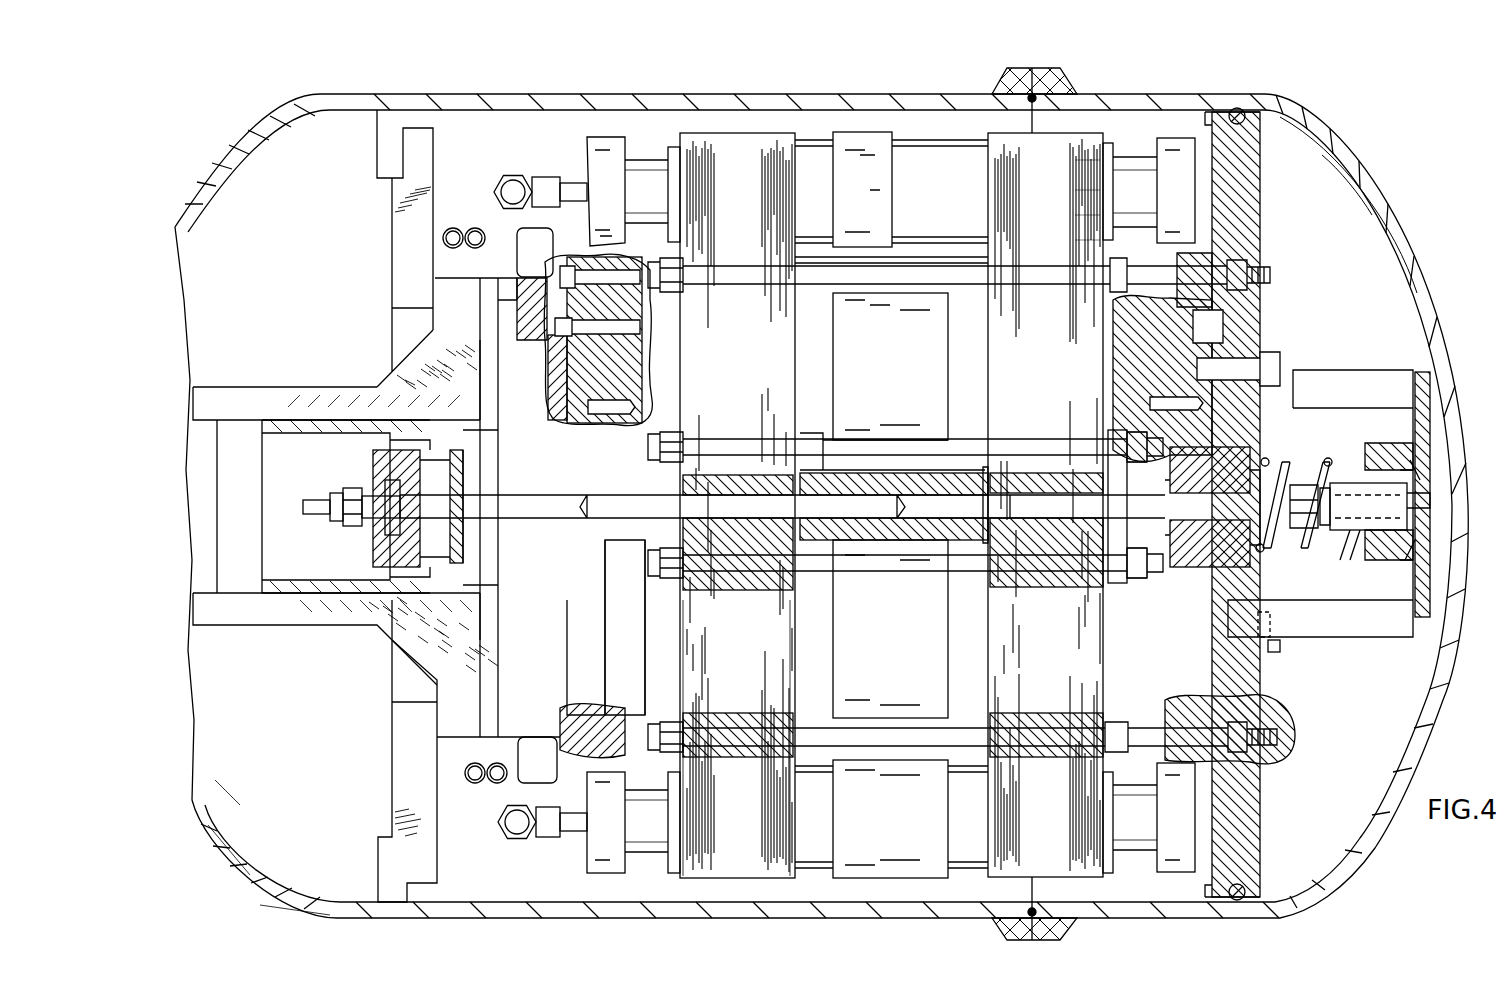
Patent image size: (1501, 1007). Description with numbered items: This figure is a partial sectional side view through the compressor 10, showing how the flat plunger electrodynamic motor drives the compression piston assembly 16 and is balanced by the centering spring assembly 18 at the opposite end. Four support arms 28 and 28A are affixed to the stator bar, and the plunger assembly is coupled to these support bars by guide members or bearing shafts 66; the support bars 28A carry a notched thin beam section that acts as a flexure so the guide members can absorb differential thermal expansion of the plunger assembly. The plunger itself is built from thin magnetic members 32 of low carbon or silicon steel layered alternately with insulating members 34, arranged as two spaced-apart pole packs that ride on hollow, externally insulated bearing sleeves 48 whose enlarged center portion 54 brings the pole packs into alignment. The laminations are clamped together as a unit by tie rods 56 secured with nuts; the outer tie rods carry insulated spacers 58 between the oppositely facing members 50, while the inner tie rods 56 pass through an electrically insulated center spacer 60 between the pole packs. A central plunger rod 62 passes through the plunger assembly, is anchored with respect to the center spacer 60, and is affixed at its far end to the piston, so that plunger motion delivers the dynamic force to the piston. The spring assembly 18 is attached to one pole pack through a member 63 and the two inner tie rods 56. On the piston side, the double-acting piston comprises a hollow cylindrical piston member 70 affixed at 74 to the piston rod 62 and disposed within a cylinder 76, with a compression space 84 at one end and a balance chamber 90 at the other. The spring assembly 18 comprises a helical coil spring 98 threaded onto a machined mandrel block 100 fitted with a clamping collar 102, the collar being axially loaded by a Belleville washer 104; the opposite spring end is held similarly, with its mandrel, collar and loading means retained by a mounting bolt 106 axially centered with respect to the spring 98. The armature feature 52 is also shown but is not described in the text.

The compressor 10 is at (1408, 829).
The compression piston assembly 16 is at (392, 452).
The centering spring assembly 18 is at (1316, 424).
The support member or arm 28 is at (595, 848).
The support bar with thin beam section 28A is at (595, 160).
The thin magnetic member 32 is at (1095, 160).
The insulating member 34 is at (1093, 188).
The bearing sleeve 48 is at (1085, 133).
The oppositely facing member 50 is at (772, 222).
The armature 52 is at (690, 826).
The center portion of bearing sleeve 54 is at (878, 826).
The tie rod 56 is at (1127, 452).
The spacer 58 is at (900, 262).
The center spacer 60 is at (922, 540).
The central plunger rod 62 is at (862, 497).
The member 63 is at (1110, 475).
The guide member or bearing shaft 66 is at (1133, 170).
The hollow cylindrical piston member 70 is at (322, 412).
The attachment point of piston member 74 is at (352, 514).
The cylinder 76 is at (247, 404).
The compression space 84 is at (430, 560).
The balance chamber 90 is at (273, 509).
The helical coil spring 98 is at (1325, 462).
The mandrel block 100 is at (1260, 548).
The clamping collar 102 is at (1385, 445).
The spring type or Belleville washer 104 is at (1165, 470).
The mounting bolt 106 is at (1365, 542).